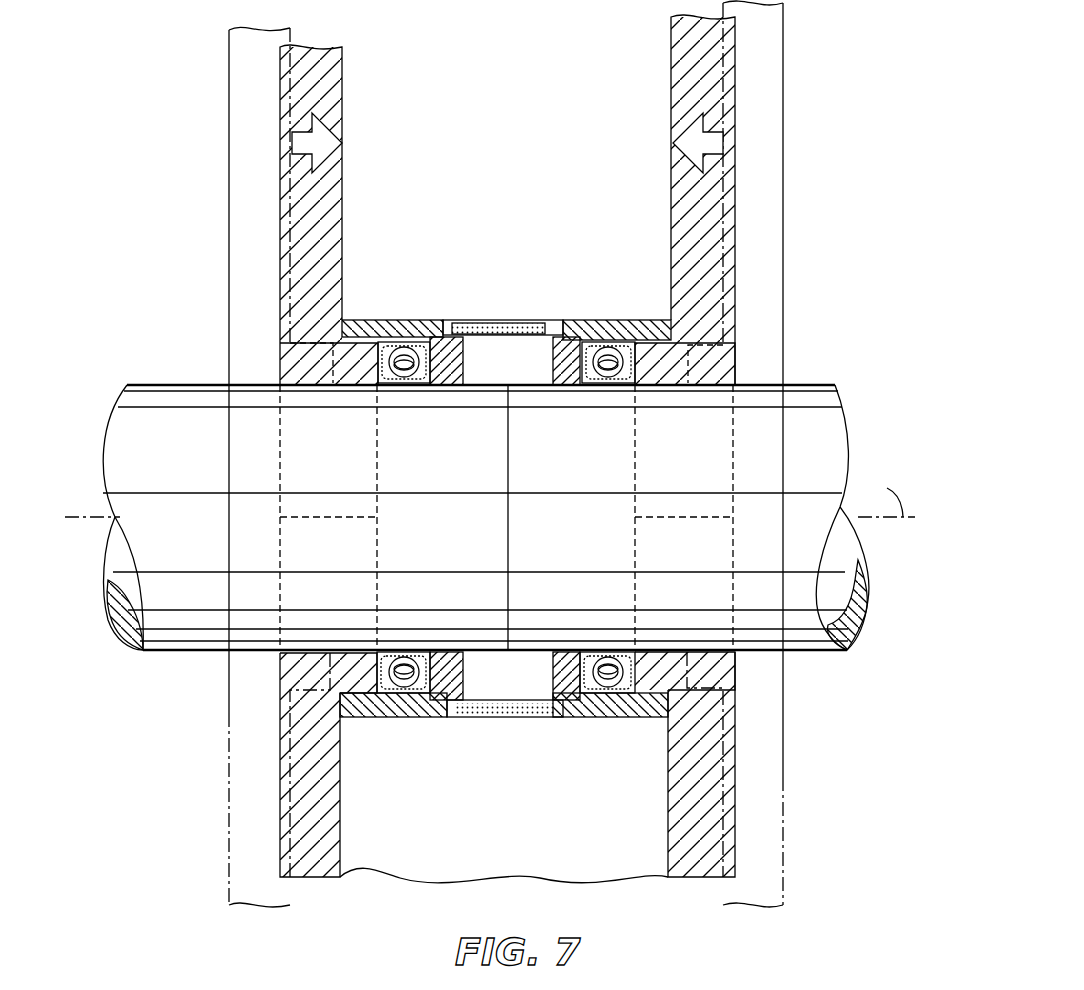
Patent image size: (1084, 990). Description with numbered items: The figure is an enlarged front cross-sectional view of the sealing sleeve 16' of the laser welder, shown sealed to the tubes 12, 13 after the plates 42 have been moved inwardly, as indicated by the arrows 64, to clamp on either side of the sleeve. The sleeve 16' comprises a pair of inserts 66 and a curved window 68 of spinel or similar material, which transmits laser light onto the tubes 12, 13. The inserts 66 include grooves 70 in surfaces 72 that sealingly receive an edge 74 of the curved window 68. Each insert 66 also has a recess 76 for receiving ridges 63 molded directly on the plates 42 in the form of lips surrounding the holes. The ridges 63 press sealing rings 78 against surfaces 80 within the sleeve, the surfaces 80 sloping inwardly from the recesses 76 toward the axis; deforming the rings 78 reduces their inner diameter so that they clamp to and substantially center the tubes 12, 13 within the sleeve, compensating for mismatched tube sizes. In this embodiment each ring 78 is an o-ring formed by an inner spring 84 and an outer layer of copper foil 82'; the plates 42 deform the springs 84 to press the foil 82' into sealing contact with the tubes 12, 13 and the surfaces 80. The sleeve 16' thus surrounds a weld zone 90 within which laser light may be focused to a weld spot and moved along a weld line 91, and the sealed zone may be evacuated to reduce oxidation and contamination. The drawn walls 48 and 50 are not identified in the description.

The tube 12 is at (820, 415).
The tube 13 is at (148, 407).
The sealing sleeve 16' is at (370, 293).
The plates 42 is at (736, 270).
The upper wall 48 is at (305, 203).
The lower wall 50 is at (320, 750).
The ridges 63 is at (340, 355).
The arrows 64 is at (330, 135).
The inserts 66 is at (400, 320).
The curved window 68 is at (480, 320).
The grooves 70 is at (455, 337).
The surfaces 72 is at (553, 368).
The edge 74 is at (495, 322).
The recess 76 is at (378, 388).
The sealing rings 78 is at (440, 388).
The surfaces 80 is at (410, 342).
The copper foil 82' is at (506, 646).
The inner spring 84 is at (625, 655).
The weld zone 90 is at (485, 388).
The weld line 91 is at (508, 531).